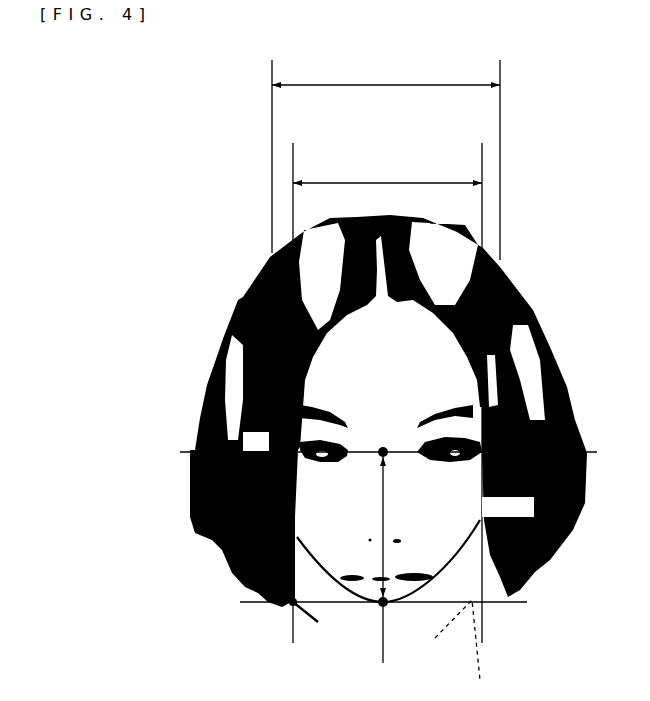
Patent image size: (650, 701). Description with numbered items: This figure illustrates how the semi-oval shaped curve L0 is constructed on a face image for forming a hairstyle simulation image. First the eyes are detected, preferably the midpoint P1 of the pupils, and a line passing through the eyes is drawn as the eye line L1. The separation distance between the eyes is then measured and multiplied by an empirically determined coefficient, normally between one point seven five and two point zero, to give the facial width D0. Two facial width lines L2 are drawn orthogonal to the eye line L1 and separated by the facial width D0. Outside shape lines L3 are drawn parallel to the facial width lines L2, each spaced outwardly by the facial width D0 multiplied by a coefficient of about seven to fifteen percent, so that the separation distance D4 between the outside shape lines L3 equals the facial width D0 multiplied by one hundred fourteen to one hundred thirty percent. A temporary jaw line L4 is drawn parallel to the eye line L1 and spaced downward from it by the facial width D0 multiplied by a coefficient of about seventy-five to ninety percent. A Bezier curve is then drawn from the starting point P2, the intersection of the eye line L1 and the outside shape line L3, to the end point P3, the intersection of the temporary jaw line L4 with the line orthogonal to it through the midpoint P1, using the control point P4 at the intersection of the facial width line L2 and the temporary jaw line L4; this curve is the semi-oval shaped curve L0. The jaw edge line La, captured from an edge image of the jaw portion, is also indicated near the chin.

The semi-oval shaped curve L0 is at (415, 557).
The eye line L1 is at (372, 454).
The facial width lines L2 is at (388, 382).
The outside shape lines L3 is at (388, 151).
The temporary jaw line L4 is at (368, 607).
The facial width D0 is at (387, 176).
The separation distance between the outside shape lines D4 is at (386, 76).
The midpoint of the pupils of the eyes P1 is at (395, 446).
The starting point P2 is at (256, 442).
The end point P3 is at (395, 610).
The control point P4 is at (293, 612).
The jaw edge line La is at (448, 640).